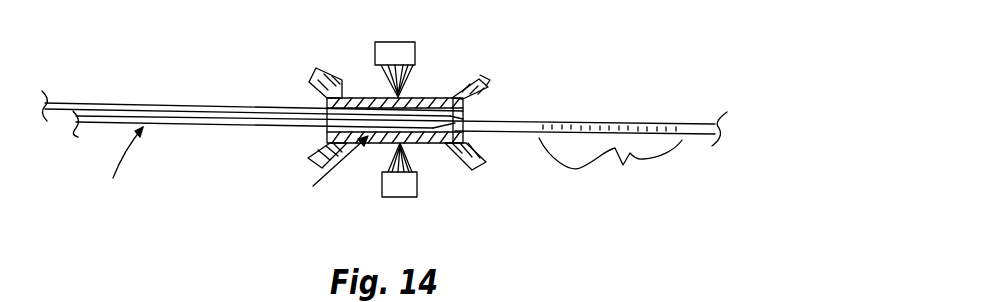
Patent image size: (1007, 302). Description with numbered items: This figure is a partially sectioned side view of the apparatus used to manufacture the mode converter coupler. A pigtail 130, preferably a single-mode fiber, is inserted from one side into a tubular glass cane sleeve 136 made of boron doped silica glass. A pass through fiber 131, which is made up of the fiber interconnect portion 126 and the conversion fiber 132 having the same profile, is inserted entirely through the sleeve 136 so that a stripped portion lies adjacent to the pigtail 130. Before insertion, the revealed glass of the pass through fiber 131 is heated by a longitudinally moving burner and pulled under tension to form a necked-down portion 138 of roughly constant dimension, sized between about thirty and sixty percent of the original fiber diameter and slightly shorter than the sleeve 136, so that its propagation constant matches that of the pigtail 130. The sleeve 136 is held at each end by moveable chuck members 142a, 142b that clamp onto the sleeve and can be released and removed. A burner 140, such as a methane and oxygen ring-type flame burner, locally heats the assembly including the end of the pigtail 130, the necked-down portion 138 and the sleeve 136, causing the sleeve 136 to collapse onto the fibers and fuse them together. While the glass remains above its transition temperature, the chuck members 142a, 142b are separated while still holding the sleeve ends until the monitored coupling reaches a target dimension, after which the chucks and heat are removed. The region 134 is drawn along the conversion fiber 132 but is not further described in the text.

The fiber interconnect portion 126 is at (195, 124).
The pigtail 130 is at (242, 107).
The pass through fiber 131 is at (120, 168).
The conversion fiber 132 is at (510, 120).
The fused transition region 134 is at (623, 172).
The tubular glass cane sleeve 136 is at (433, 98).
The necked-down portion 138 is at (328, 175).
The burner 140 is at (392, 52).
The chuck member 142a is at (310, 157).
The chuck member 142b is at (475, 172).